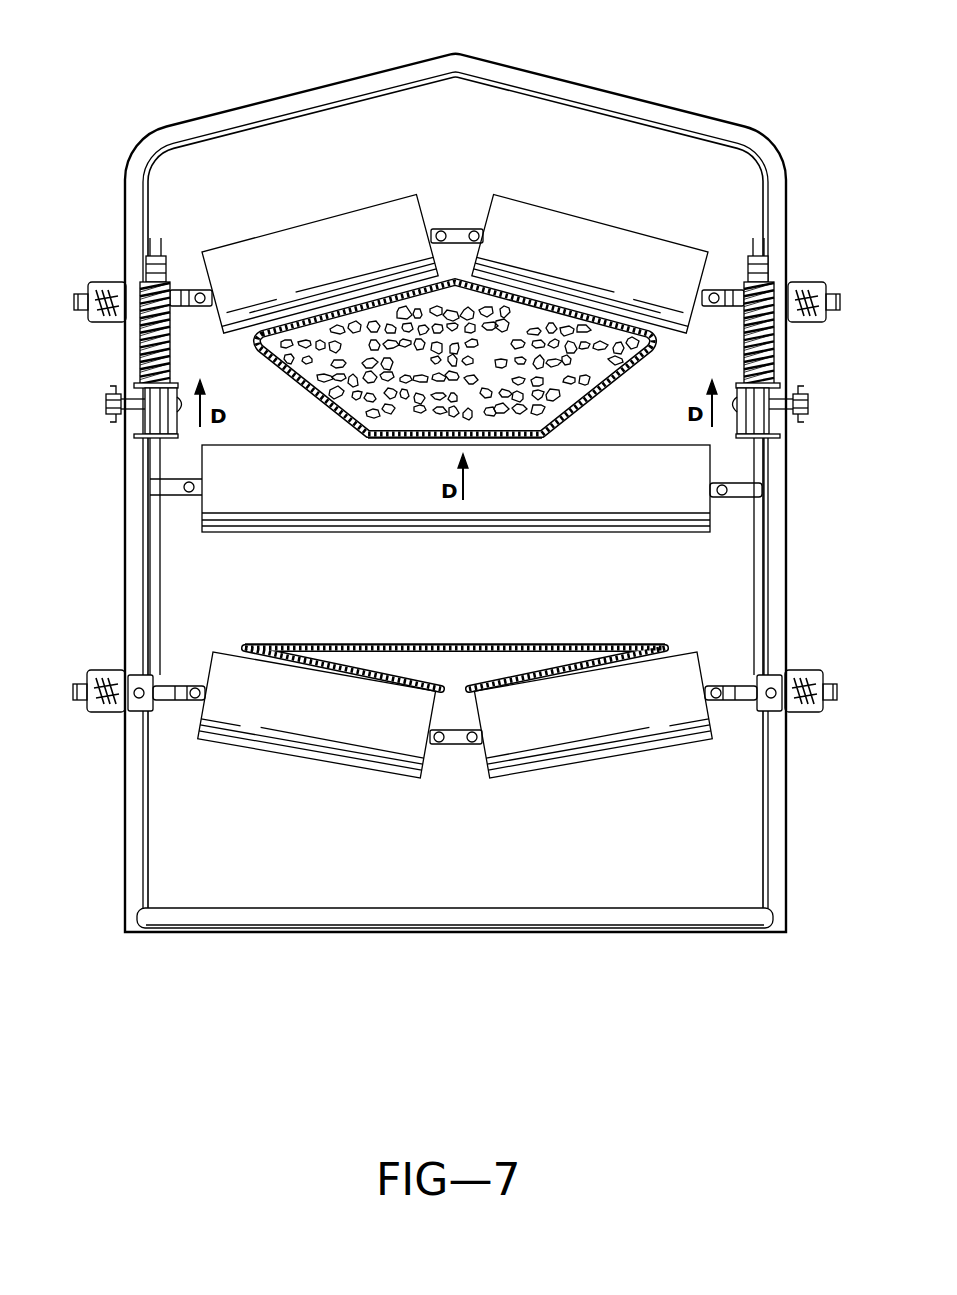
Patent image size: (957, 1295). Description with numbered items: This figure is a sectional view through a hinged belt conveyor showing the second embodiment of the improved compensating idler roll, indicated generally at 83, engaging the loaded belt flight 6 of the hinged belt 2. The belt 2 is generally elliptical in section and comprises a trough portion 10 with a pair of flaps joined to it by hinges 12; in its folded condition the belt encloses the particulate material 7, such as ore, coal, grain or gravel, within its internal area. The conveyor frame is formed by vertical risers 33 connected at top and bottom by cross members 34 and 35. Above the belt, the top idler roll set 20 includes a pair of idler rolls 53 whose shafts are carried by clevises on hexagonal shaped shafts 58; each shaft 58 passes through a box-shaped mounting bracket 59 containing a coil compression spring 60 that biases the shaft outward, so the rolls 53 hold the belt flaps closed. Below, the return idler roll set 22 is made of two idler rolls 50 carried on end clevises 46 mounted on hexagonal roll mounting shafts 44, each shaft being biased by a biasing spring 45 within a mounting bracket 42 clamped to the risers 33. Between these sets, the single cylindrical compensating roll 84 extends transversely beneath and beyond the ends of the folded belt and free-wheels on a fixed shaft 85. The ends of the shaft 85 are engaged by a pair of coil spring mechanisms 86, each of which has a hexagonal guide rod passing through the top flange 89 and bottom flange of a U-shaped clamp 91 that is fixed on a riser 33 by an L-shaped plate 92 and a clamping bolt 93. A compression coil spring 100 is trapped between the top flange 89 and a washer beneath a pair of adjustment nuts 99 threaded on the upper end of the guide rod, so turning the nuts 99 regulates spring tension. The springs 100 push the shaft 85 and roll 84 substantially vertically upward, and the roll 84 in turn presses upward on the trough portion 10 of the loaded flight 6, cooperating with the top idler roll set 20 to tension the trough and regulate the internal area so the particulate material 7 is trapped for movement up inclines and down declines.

The hinged belt 2 is at (468, 640).
The loaded flight 6 is at (303, 402).
The particulate material 7 is at (592, 380).
The trough portion 10 is at (430, 450).
The hinges 12 is at (668, 645).
The top idler roll set 20 is at (455, 206).
The return idler roll set 22 is at (456, 748).
The vertical risers 33 is at (786, 850).
The cross member 34 is at (528, 68).
The cross member 35 is at (320, 910).
The mounting brackets 42 is at (802, 678).
The roll mounting shaft 44 is at (168, 712).
The biasing spring 45 is at (106, 714).
The end clevis 46 is at (724, 688).
The idler roll 50 is at (455, 715).
The idler rolls 53 is at (455, 264).
The hexagonal shaped shaft 58 is at (180, 290).
The mounting bracket 59 is at (122, 285).
The coil compression spring 60 is at (802, 300).
The compensating idler roll embodiment 83 is at (356, 536).
The compensating roll 84 is at (430, 488).
The shaft 85 is at (714, 498).
The coil spring mechanism 86 is at (776, 343).
The top flange 89 is at (766, 432).
The U-shaped clamp 91 is at (142, 440).
The L-shaped plate 92 is at (124, 436).
The clamping bolt 93 is at (136, 404).
The adjustment nuts 99 is at (750, 268).
The compression coil spring 100 is at (140, 328).